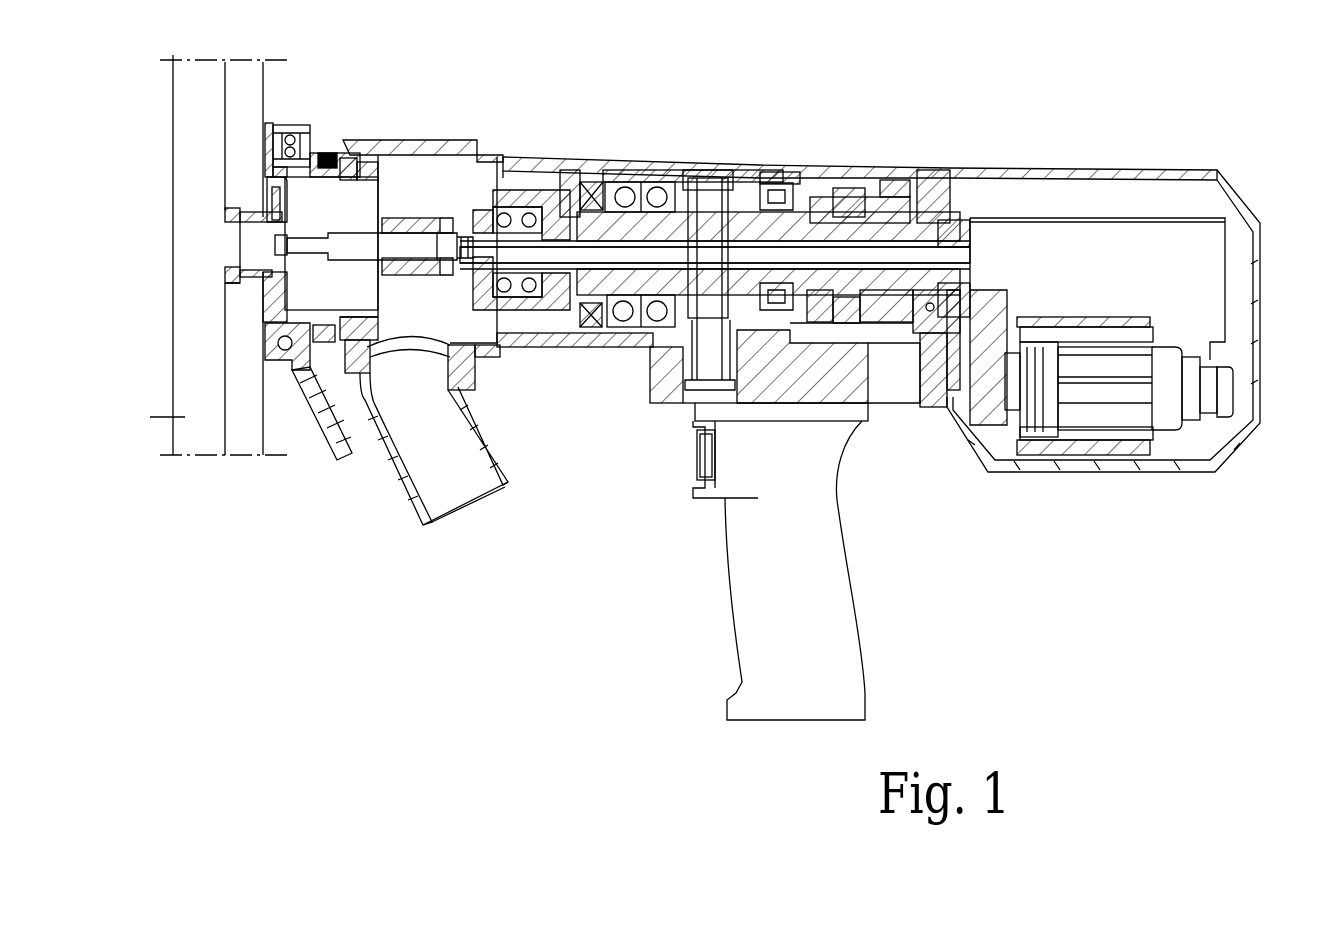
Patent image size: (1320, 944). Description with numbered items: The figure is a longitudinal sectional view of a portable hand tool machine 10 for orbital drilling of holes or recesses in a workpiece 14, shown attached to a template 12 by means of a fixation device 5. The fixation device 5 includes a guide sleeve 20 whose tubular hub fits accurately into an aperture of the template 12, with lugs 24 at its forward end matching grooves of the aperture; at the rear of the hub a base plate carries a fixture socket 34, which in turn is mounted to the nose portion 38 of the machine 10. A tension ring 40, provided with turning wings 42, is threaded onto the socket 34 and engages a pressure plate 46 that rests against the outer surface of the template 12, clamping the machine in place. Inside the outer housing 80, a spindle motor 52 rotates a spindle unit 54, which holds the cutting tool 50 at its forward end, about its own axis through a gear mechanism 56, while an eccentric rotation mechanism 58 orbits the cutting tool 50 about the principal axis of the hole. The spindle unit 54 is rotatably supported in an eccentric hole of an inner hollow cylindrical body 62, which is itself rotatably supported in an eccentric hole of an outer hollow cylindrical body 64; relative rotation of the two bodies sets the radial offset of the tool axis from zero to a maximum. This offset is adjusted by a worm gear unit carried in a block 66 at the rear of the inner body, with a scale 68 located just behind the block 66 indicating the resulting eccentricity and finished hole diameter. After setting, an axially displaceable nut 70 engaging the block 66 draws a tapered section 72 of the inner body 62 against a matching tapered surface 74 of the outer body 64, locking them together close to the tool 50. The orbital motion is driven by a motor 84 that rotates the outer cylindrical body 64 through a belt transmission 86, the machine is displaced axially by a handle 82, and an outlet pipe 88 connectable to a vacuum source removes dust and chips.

The fixation device 5 is at (325, 136).
The portable hand tool machine 10 is at (820, 136).
The template 12 is at (250, 108).
The workpiece 14 is at (140, 255).
The guide sleeve 20 is at (241, 235).
The lugs 24 is at (227, 283).
The fixture socket 34 is at (312, 172).
The nose portion 38 is at (381, 136).
The tension ring 40 is at (303, 135).
The turning wings 42 is at (323, 423).
The pressure plate 46 is at (273, 150).
The cutting tool 50 is at (300, 245).
The spindle motor 52 is at (1138, 417).
The spindle unit 54 is at (960, 272).
The gear mechanism 56 is at (1016, 307).
The eccentric rotation mechanism 58 is at (720, 181).
The inner hollow cylindrical body 62 is at (553, 297).
The outer hollow cylindrical body 64 is at (595, 210).
The block 66 is at (883, 208).
The scale 68 is at (932, 210).
The axially displaceable nut 70 is at (848, 197).
The tapered section 72 is at (580, 212).
The tapered surface 74 is at (637, 190).
The outer housing 80 is at (765, 162).
The handle 82 is at (833, 577).
The motor 84 is at (893, 380).
The belt transmission 86 is at (707, 353).
The outlet pipe 88 is at (453, 487).